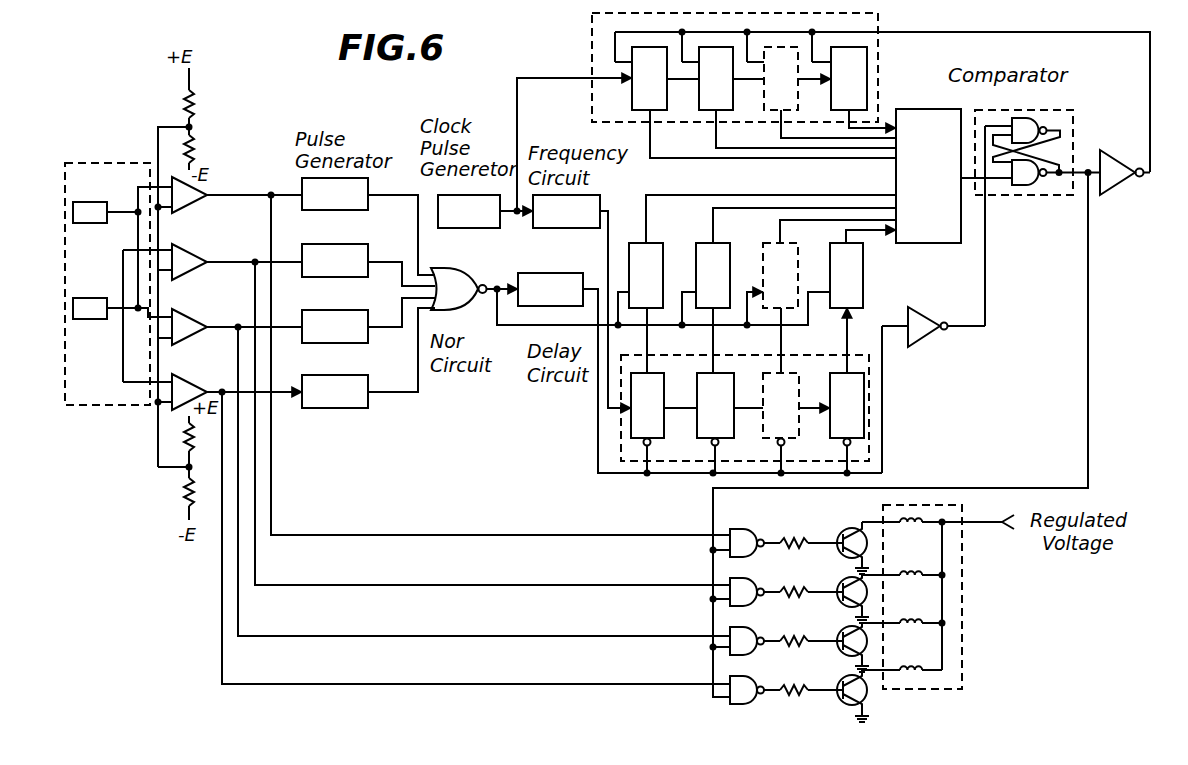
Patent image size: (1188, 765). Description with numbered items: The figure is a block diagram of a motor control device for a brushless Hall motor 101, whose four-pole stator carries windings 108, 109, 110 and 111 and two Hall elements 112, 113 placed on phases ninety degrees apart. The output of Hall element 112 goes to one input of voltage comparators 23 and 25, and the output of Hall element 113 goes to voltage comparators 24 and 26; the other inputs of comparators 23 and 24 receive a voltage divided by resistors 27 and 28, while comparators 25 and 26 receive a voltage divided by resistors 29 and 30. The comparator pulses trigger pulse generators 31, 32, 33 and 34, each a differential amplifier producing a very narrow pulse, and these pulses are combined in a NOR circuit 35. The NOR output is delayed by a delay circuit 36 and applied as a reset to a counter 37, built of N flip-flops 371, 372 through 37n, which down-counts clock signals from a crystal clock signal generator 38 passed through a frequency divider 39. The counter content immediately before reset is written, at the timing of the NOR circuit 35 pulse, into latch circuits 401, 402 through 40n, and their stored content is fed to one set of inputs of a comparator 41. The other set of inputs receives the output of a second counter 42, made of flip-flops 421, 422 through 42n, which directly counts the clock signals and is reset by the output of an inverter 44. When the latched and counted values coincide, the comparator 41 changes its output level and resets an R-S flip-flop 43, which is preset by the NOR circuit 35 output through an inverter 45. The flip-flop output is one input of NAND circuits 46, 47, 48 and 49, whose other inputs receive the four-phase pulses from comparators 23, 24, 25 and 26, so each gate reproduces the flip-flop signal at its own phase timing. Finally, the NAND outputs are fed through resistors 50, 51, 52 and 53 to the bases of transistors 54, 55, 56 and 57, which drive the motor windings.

The brushless motor 101 is at (93, 166).
The Hall element 112 is at (93, 208).
The Hall element 113 is at (80, 300).
The voltage comparator 23 is at (194, 198).
The voltage comparator 24 is at (194, 265).
The voltage comparator 25 is at (194, 331).
The voltage comparator 26 is at (176, 406).
The resistor 27 is at (193, 100).
The resistor 28 is at (193, 142).
The resistor 29 is at (186, 440).
The resistor 30 is at (186, 495).
The pulse generator 31 is at (352, 170).
The pulse generator 32 is at (359, 244).
The pulse generator 33 is at (345, 311).
The pulse generator 34 is at (358, 376).
The NOR circuit 35 is at (453, 253).
The delay circuit 36 is at (558, 274).
The counter 37 is at (621, 437).
The flip-flop 371 is at (686, 354).
The flip-flop 372 is at (723, 380).
The flip-flop 37n is at (866, 375).
The clock signal generator 38 is at (468, 229).
The frequency divider 39 is at (538, 229).
The latch circuit 401 is at (656, 250).
The latch circuit 402 is at (724, 250).
The latch circuit 40n is at (864, 262).
The comparator 41 is at (932, 243).
The counter 42 is at (928, 58).
The flip-flop 421 is at (634, 103).
The flip-flop 422 is at (712, 112).
The flip-flop 42n is at (869, 95).
The R-S flip-flop 43 is at (1005, 196).
The inverter 44 is at (1102, 197).
The inverter 45 is at (925, 332).
The NAND circuit 46 is at (727, 526).
The NAND circuit 47 is at (727, 580).
The NAND circuit 48 is at (728, 628).
The NAND circuit 49 is at (728, 680).
The resistor 50 is at (800, 524).
The resistor 51 is at (800, 573).
The resistor 52 is at (800, 625).
The resistor 53 is at (800, 677).
The transistor 54 is at (842, 531).
The transistor 55 is at (841, 582).
The transistor 56 is at (842, 632).
The transistor 57 is at (848, 676).
The winding 108 is at (914, 537).
The winding 109 is at (903, 674).
The winding 110 is at (912, 640).
The winding 111 is at (916, 589).